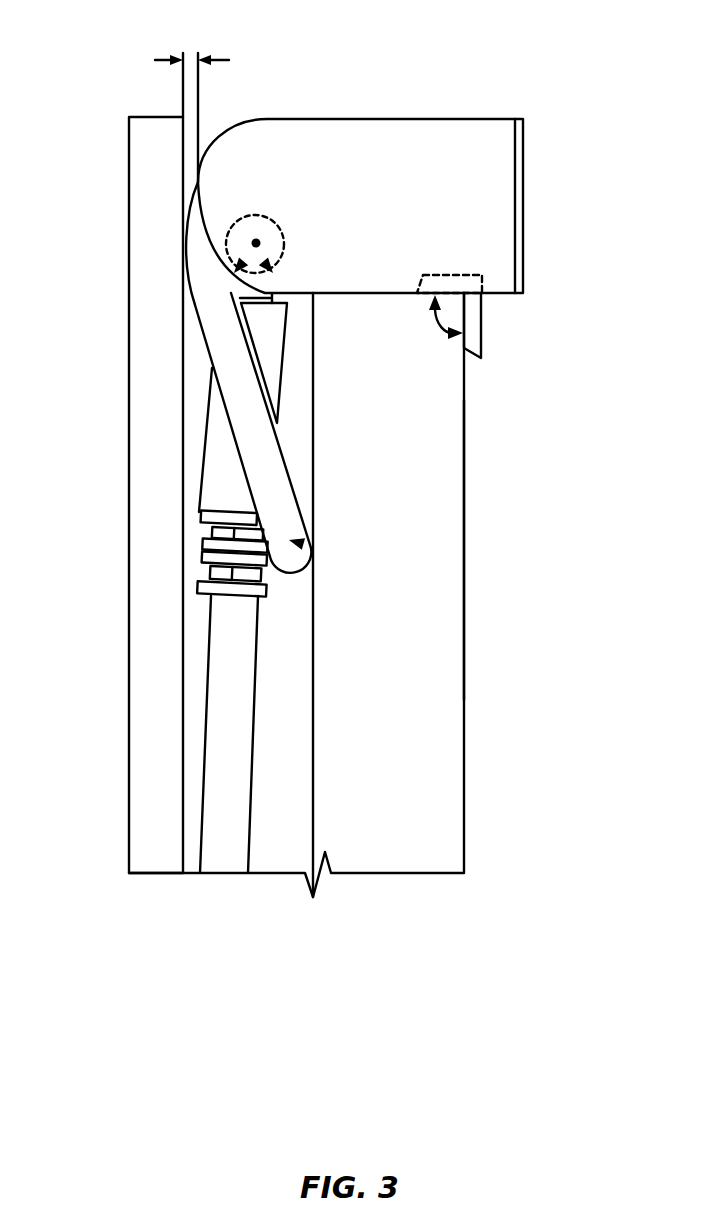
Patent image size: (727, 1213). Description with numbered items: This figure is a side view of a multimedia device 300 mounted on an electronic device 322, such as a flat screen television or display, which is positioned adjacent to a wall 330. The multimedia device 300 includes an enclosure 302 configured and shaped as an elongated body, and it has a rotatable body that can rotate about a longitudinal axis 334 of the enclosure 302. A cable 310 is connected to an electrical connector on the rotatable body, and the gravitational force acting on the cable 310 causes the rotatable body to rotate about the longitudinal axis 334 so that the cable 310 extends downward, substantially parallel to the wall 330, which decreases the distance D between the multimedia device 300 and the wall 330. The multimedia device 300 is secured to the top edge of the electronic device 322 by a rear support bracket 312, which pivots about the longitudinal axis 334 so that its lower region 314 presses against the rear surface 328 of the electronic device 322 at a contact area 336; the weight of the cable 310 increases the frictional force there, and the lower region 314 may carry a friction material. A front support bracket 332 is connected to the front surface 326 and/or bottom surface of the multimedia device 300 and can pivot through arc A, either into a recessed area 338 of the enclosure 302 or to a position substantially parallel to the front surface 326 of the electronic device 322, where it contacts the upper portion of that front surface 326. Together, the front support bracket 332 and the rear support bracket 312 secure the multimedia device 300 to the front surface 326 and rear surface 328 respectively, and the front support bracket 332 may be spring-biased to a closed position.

The multimedia device 300 is at (526, 93).
The enclosure 302 is at (393, 118).
The cable 310 is at (283, 367).
The rear support bracket 312 is at (204, 377).
The lower region 314 is at (311, 536).
The electronic device 322 is at (362, 595).
The front surface 326 is at (465, 547).
The rear surface 328 is at (313, 600).
The wall 330 is at (129, 150).
The front support bracket 332 is at (482, 337).
The longitudinal axis 334 is at (258, 244).
The contact area 336 is at (300, 542).
The recessed area 338 is at (453, 275).